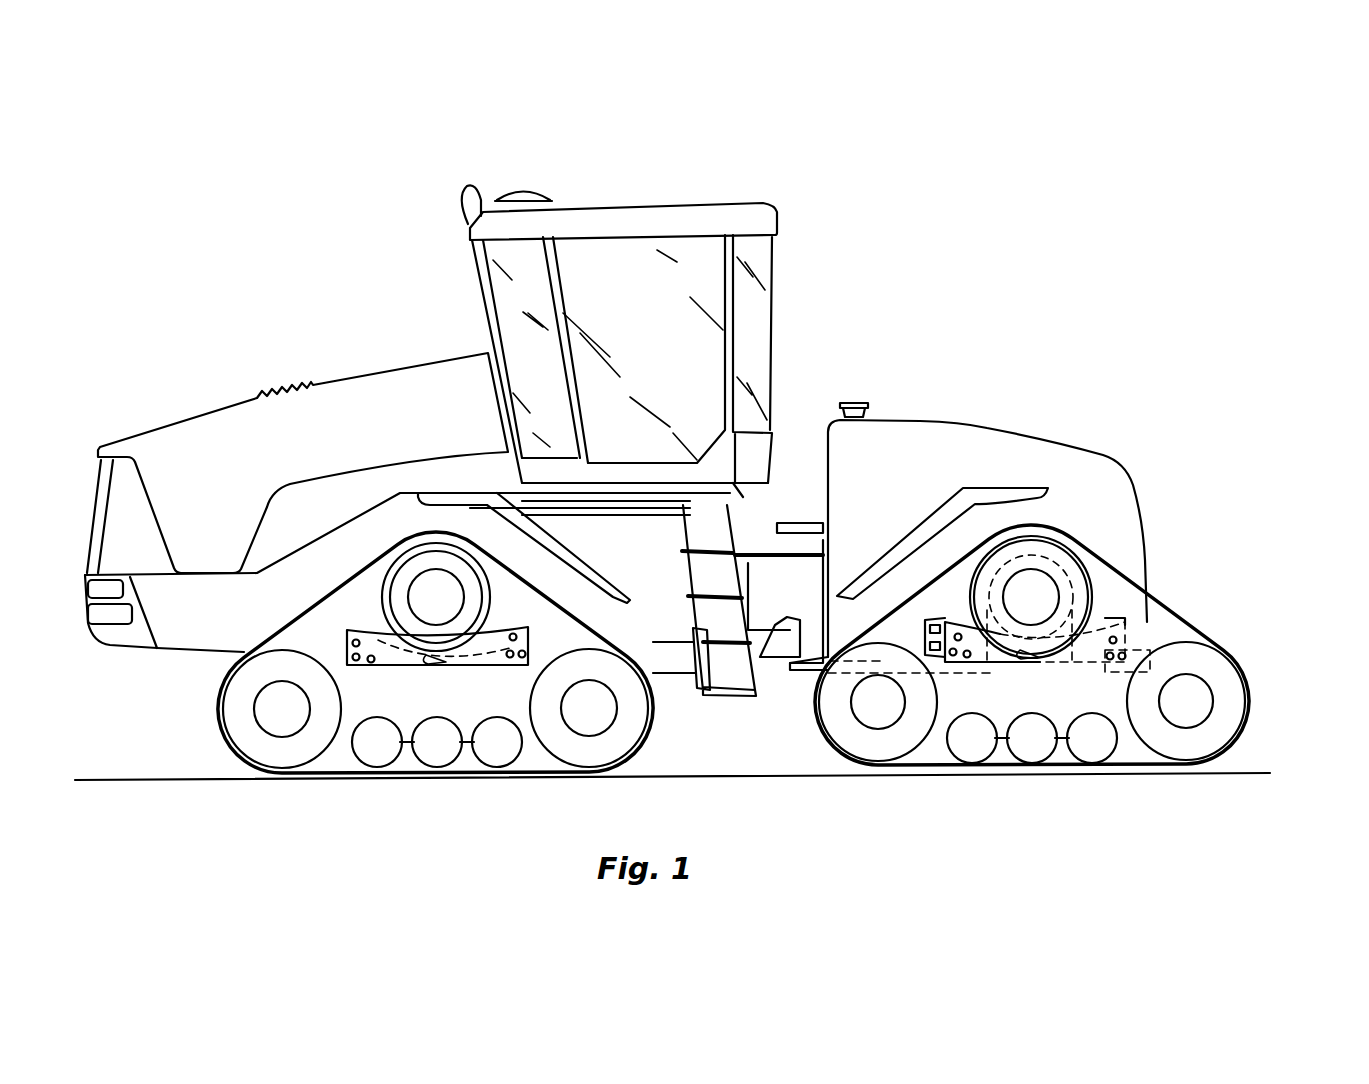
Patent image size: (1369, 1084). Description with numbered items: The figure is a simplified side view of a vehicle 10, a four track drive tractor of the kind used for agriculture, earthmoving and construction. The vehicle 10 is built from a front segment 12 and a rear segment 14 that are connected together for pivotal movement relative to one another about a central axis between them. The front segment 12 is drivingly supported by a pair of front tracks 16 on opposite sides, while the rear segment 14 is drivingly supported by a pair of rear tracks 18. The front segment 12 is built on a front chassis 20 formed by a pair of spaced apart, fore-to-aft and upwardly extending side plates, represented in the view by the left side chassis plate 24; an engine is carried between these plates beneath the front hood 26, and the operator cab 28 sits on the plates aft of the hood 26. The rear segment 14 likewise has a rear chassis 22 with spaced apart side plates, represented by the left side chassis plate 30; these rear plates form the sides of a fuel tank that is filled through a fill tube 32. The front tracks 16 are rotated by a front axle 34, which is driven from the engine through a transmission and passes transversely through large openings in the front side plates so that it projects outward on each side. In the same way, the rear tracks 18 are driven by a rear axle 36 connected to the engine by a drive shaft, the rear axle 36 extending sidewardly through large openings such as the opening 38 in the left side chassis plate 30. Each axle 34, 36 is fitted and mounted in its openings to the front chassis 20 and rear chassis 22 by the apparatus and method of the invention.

The vehicle 10 is at (1108, 216).
The front segment 12 is at (173, 418).
The rear segment 14 is at (1102, 450).
The front tracks 16 is at (213, 728).
The rear tracks 18 is at (1258, 686).
The front chassis 20 is at (170, 653).
The rear chassis 22 is at (1148, 548).
The left side chassis plate 24 is at (172, 628).
The front hood 26 is at (335, 378).
The operator cab 28 is at (710, 202).
The left side chassis plate 30 is at (1110, 497).
The fill tube 32 is at (873, 417).
The front axle 34 is at (408, 600).
The rear axle 36 is at (1058, 598).
The opening 38 is at (1033, 677).